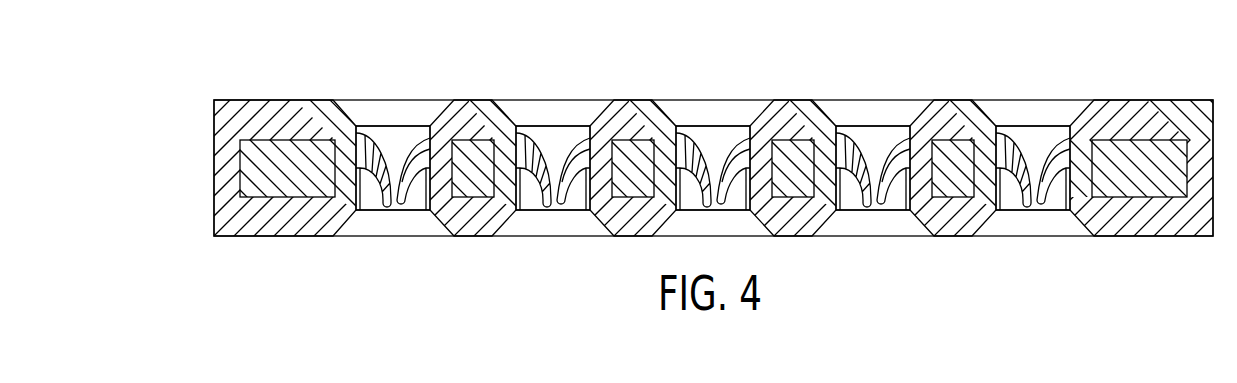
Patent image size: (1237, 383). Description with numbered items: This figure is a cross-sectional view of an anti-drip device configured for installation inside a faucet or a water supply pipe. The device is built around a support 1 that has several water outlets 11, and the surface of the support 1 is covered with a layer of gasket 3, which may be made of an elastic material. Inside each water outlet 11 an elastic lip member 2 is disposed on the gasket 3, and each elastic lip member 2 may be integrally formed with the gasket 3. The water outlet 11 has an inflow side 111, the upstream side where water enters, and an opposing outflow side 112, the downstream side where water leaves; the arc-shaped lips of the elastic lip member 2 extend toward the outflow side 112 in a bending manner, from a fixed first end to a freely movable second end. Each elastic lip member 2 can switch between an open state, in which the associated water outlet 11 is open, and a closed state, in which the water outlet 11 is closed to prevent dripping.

The support 1 is at (1148, 168).
The elastic lip member 2 is at (858, 168).
The gasket 3 is at (243, 129).
The water outlet 11 is at (1032, 127).
The inflow side 111 is at (553, 126).
The outflow side 112 is at (553, 212).